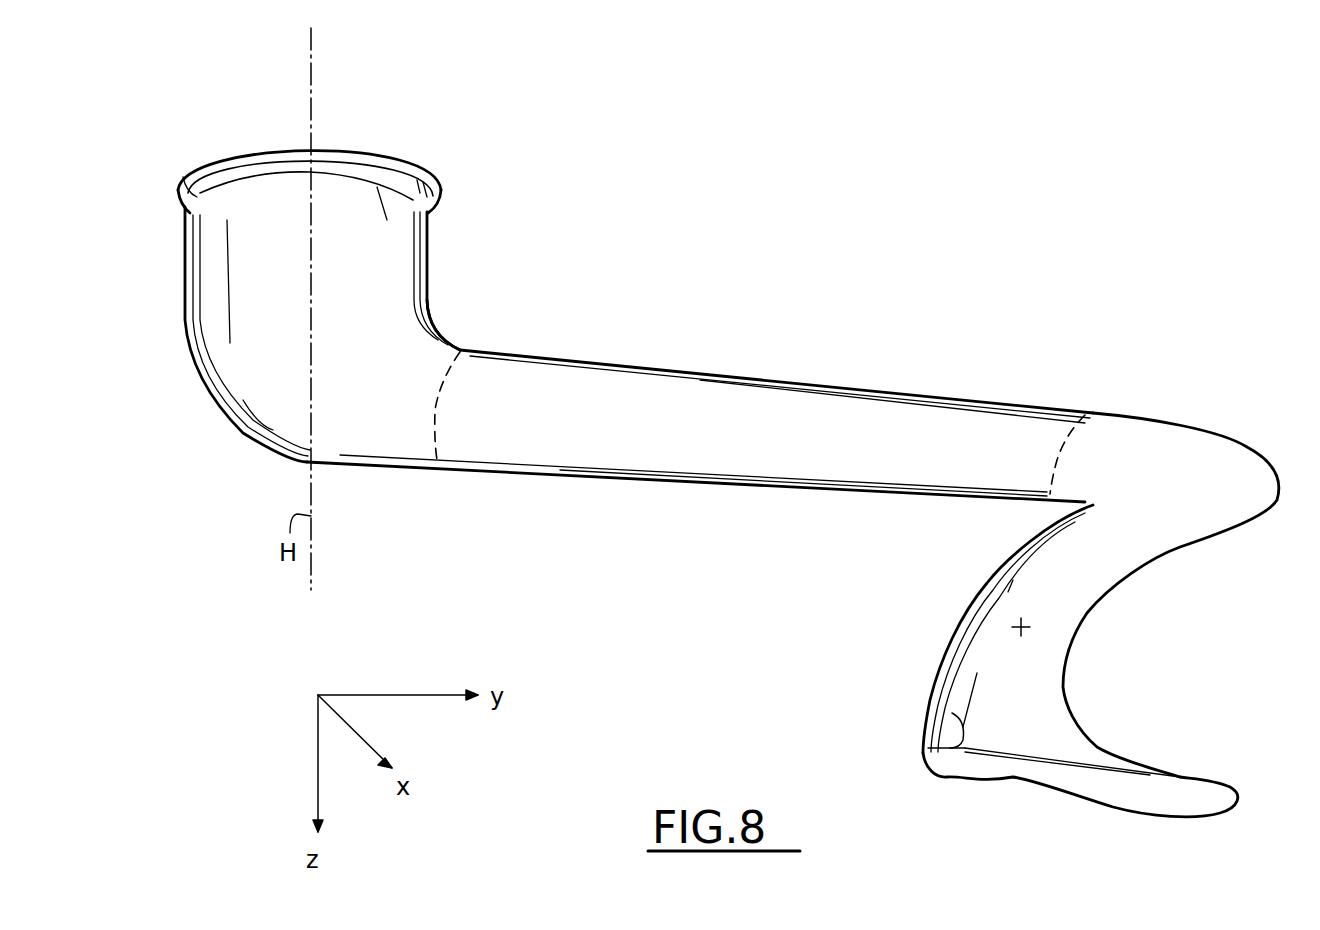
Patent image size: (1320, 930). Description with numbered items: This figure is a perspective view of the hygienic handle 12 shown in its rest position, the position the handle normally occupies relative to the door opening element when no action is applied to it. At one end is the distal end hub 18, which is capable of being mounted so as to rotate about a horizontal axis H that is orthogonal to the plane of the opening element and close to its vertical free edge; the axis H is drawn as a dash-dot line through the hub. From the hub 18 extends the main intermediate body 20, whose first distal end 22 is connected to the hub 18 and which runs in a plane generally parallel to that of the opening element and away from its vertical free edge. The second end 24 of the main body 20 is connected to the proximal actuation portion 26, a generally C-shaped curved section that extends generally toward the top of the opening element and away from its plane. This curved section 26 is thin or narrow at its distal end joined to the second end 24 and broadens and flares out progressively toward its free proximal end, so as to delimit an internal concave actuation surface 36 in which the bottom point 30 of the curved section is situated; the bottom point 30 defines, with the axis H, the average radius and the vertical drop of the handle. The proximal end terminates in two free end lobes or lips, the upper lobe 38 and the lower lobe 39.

The hygienic handle 12 is at (823, 317).
The distal end hub 18 is at (418, 306).
The main intermediate body 20 is at (720, 371).
The first distal end 22 is at (437, 428).
The second end 24 is at (1057, 450).
The proximal actuation portion 26 is at (1070, 597).
The bottom point 30 is at (1023, 628).
The internal concave actuation surface 36 is at (993, 600).
The upper lobe 38 is at (1190, 773).
The lower lobe 39 is at (952, 713).